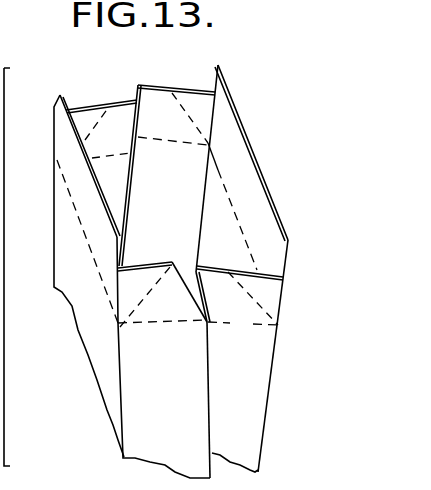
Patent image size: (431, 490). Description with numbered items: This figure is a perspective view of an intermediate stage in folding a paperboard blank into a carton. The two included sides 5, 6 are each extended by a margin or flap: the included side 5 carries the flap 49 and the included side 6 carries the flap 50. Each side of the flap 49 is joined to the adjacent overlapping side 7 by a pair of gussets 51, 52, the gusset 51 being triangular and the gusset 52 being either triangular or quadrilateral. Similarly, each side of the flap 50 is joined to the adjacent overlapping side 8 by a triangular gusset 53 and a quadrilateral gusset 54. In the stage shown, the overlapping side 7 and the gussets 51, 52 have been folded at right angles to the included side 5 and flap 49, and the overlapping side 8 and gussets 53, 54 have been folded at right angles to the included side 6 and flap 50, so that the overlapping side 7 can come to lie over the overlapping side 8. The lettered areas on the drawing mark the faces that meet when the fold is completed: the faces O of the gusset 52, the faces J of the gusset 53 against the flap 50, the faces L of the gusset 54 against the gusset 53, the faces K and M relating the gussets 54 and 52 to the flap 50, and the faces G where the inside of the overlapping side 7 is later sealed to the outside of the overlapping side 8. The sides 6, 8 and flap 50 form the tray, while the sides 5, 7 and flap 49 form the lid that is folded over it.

The included side 5 is at (70, 275).
The included side 6 is at (213, 223).
The overlapping side 7 is at (122, 163).
The overlapping side 8 is at (193, 193).
The flap 49 is at (93, 158).
The flap 50 is at (232, 128).
The gusset 51 is at (92, 110).
The gusset 52 is at (118, 118).
The gusset 53 is at (183, 100).
The gusset 54 is at (152, 90).